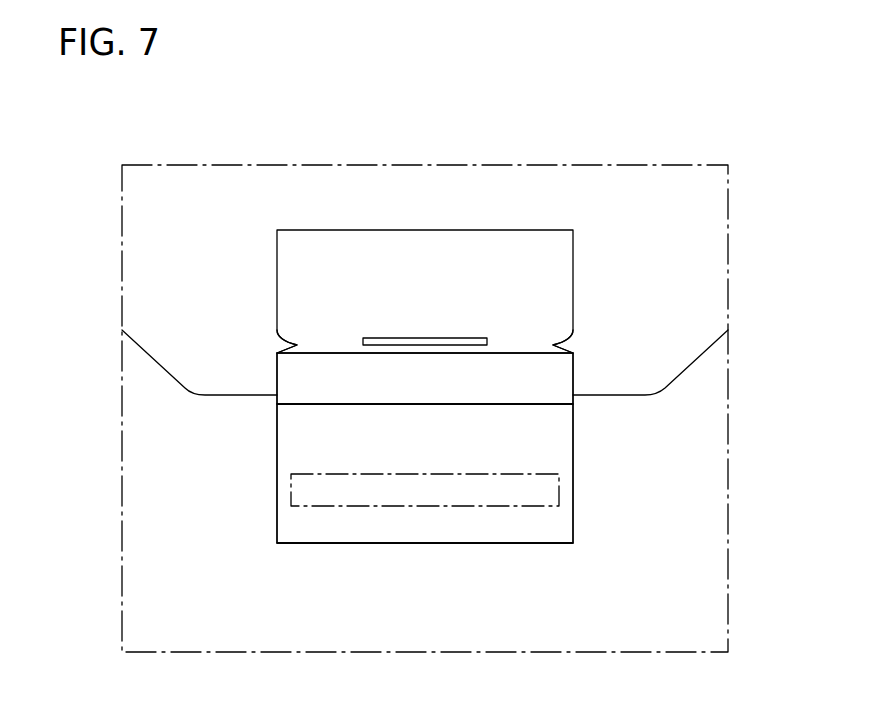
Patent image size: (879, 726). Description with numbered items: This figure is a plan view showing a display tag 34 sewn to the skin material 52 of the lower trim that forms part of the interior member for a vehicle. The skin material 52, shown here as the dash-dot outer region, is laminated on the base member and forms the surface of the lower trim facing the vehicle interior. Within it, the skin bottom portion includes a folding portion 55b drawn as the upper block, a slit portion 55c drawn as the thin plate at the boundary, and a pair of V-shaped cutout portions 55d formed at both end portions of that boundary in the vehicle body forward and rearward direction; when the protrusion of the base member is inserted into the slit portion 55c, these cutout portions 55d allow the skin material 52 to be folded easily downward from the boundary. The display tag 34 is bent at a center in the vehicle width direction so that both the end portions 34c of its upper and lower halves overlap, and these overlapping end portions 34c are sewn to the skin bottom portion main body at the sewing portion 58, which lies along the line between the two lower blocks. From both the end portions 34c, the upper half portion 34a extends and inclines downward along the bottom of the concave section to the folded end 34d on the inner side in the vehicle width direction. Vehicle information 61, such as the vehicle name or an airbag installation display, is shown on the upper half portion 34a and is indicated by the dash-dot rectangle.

The skin material 52 is at (227, 617).
The display tag 34 is at (527, 420).
The upper half portion 34a is at (418, 545).
The both end portions 34c is at (343, 377).
The folded end 34d is at (463, 545).
The folding portion 55b is at (530, 272).
The slit portion 55c is at (410, 343).
The cutout portions 55d is at (282, 343).
The sewing portion 58 is at (532, 405).
The vehicle information 61 is at (523, 506).